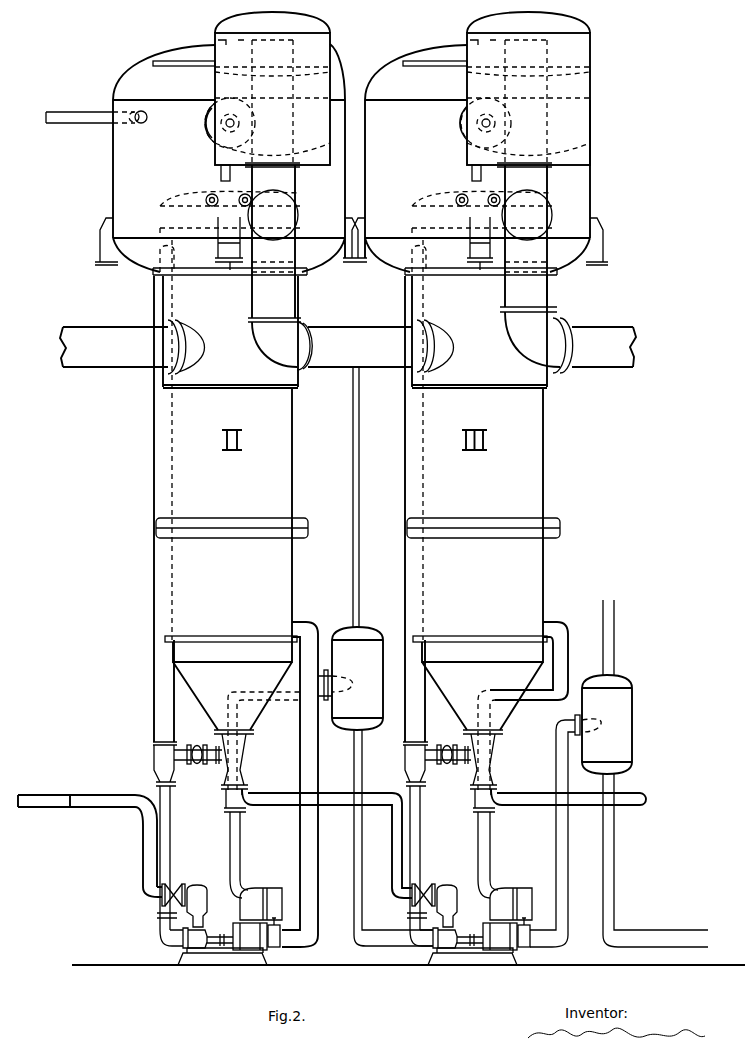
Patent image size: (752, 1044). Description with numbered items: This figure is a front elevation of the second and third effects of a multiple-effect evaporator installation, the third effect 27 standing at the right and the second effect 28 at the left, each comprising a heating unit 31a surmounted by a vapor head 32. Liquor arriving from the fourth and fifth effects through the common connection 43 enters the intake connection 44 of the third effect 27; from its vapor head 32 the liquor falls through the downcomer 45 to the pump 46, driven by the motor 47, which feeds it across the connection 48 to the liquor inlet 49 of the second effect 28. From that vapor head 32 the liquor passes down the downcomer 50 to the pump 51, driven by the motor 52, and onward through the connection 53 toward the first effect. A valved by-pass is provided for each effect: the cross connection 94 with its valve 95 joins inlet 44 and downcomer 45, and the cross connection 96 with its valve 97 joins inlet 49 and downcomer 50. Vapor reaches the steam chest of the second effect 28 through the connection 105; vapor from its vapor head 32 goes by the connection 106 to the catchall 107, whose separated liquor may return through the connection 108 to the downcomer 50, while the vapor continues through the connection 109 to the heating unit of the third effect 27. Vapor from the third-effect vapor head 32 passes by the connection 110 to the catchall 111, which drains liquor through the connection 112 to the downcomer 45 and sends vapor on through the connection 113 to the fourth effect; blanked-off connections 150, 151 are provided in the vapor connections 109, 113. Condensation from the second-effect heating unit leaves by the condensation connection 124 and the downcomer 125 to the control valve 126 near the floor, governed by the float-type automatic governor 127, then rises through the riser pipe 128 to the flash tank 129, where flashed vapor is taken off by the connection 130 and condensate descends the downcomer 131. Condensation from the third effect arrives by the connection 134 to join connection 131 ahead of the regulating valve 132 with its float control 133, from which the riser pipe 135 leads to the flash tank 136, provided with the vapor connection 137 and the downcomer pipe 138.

The third effect 27 is at (553, 440).
The second effect 28 is at (305, 437).
The heating unit 31a is at (566, 491).
The vapor head 32 is at (128, 175).
The common connection 43 is at (522, 806).
The intake connection 44 is at (494, 775).
The downcomer 45 is at (407, 588).
The pump 46 is at (433, 950).
The motor 47 is at (497, 953).
The connection 48 is at (391, 840).
The liquor inlet 49 is at (246, 773).
The downcomer 50 is at (158, 594).
The pump 51 is at (182, 950).
The motor 52 is at (247, 953).
The connection 53 is at (143, 852).
The cross connection 94 is at (463, 762).
The valve 95 is at (451, 745).
The cross connection 96 is at (213, 762).
The valve 97 is at (197, 745).
The connection 105 is at (105, 327).
The connection 106 is at (212, 120).
The catchall 107 is at (272, 89).
The connection 108 is at (221, 175).
The connection 109 is at (348, 324).
The connection 110 is at (462, 127).
The catchall 111 is at (530, 89).
The connection 112 is at (472, 172).
The connection 113 is at (595, 368).
The condensation connection 124 is at (312, 626).
The downcomer 125 is at (233, 850).
The control valve 126 is at (270, 950).
The automatic governor 127 is at (272, 893).
The riser pipe 128 is at (303, 828).
The flash tank 129 is at (357, 678).
The connection 130 is at (353, 562).
The downcomer 131 is at (355, 753).
The regulating valve 132 is at (522, 947).
The float control 133 is at (527, 893).
The connection 134 is at (556, 622).
The riser pipe 135 is at (556, 845).
The flash tank 136 is at (603, 724).
The vapor connection 137 is at (614, 643).
The downcomer pipe 138 is at (616, 877).
The blanked-off connection 150 is at (298, 213).
The blanked-off connection 151 is at (553, 214).